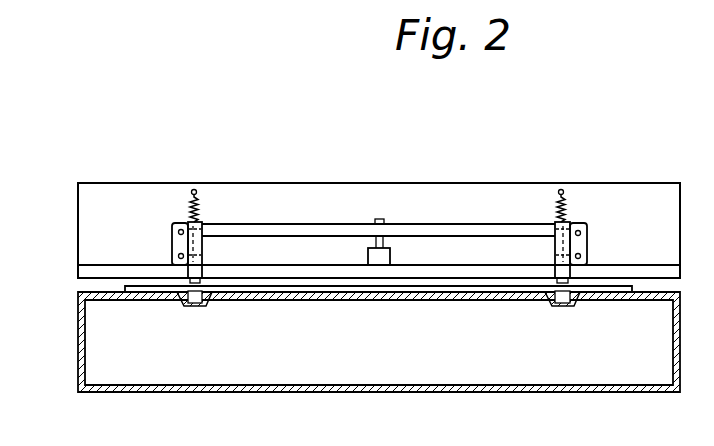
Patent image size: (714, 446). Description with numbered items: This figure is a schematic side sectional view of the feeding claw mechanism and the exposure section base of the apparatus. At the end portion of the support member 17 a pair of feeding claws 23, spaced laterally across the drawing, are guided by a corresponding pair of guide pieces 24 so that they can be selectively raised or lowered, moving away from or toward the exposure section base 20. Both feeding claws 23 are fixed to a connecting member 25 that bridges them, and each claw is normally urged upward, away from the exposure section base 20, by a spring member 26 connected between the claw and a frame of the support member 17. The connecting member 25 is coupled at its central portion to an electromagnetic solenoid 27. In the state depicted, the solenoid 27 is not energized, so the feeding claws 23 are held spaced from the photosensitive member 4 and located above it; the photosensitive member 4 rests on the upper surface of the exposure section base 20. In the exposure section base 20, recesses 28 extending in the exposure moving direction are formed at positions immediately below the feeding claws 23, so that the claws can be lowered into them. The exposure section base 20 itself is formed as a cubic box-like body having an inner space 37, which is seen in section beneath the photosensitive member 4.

The support member 17 is at (153, 210).
The spring member 26 is at (197, 198).
The connecting member 25 is at (288, 226).
The guide piece 24 is at (172, 242).
The exposure section base 20 is at (349, 361).
The recess 28 is at (190, 307).
The feeding claw 23 is at (205, 306).
The photosensitive member 4 is at (300, 288).
The electromagnetic solenoid 27 is at (377, 256).
The space 37 is at (469, 371).